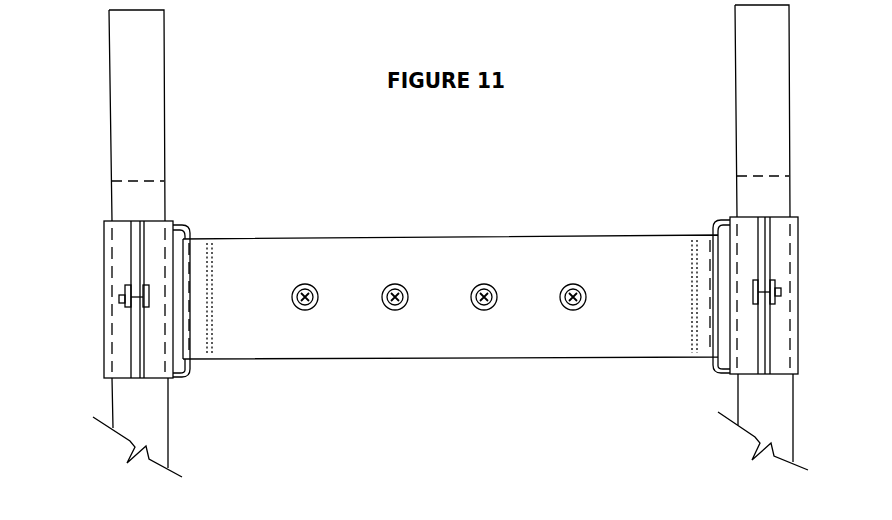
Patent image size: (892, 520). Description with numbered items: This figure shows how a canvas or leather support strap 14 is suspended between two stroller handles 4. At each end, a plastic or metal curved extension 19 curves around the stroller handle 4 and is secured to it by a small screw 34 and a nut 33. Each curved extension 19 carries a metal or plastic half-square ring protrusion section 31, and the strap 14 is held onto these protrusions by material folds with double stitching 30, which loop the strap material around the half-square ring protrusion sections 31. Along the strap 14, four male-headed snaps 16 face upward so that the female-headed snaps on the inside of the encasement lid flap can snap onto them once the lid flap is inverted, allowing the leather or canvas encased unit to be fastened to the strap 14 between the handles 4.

The stroller handle 4 is at (165, 107).
The support strap 14 is at (443, 360).
The male-headed snaps 16 is at (573, 310).
The curved extensions 19 is at (104, 335).
The material folds with double stitching 30 is at (208, 253).
The half-square ring protrusion sections 31 is at (180, 377).
The nut 33 is at (129, 285).
The screw 34 is at (146, 285).